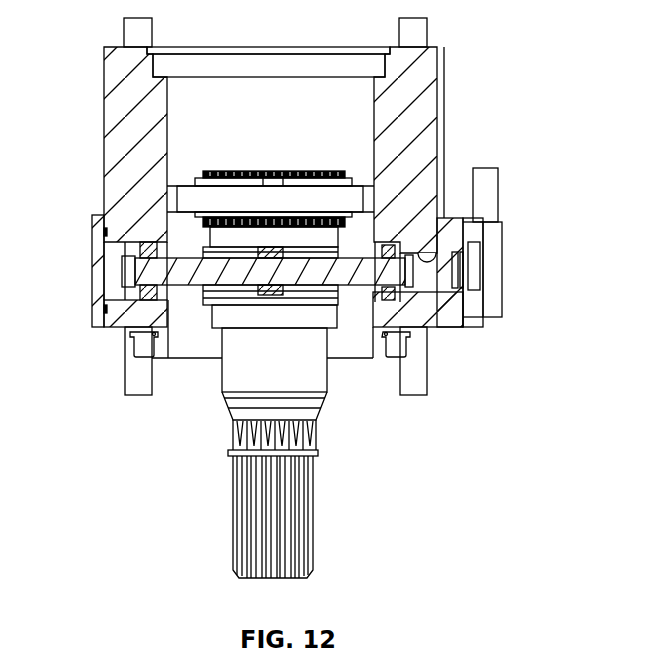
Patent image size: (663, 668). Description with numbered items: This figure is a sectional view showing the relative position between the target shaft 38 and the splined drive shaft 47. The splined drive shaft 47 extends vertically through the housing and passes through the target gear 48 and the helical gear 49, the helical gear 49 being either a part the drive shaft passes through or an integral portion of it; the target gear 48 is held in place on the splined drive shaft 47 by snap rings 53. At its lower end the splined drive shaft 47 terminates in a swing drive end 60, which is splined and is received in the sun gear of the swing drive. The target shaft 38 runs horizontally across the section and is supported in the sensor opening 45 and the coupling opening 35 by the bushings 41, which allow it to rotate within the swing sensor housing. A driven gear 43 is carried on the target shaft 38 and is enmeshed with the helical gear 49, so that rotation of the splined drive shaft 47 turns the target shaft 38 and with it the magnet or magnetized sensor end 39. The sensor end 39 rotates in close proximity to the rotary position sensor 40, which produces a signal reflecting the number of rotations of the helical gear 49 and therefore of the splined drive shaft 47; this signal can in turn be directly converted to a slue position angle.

The coupling opening 35 is at (128, 240).
The bushings 41 is at (148, 242).
The snap rings 53 is at (255, 213).
The target gear 48 is at (288, 192).
The sensor opening 45 is at (422, 248).
The rotary position sensor 40 is at (510, 262).
The sensor end 39 is at (478, 280).
The target shaft 38 is at (352, 322).
The helical gear 49 is at (317, 322).
The driven gear 43 is at (268, 290).
The splined drive shaft 47 is at (208, 397).
The swing drive end 60 is at (233, 530).